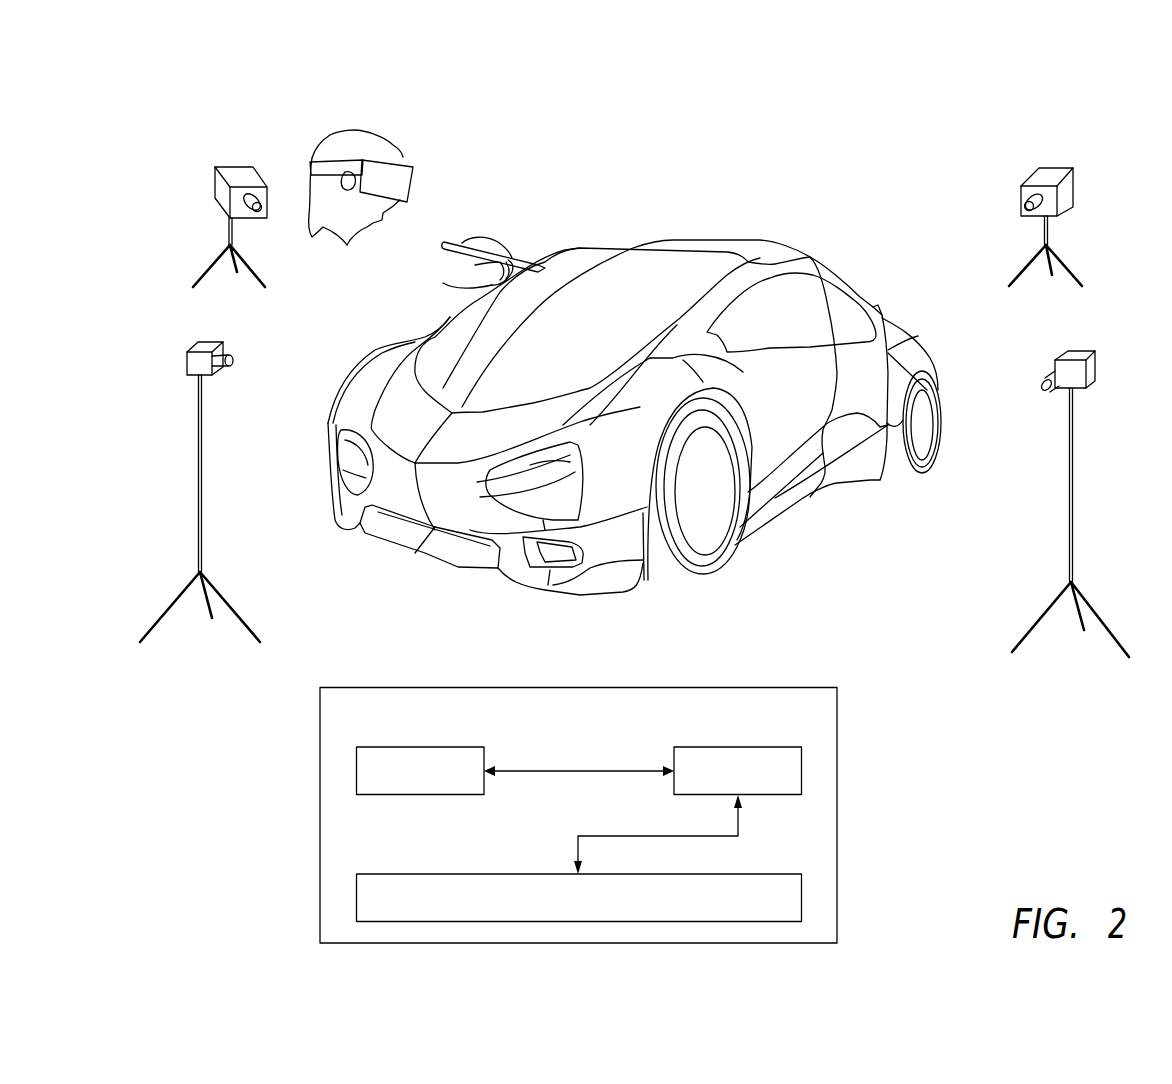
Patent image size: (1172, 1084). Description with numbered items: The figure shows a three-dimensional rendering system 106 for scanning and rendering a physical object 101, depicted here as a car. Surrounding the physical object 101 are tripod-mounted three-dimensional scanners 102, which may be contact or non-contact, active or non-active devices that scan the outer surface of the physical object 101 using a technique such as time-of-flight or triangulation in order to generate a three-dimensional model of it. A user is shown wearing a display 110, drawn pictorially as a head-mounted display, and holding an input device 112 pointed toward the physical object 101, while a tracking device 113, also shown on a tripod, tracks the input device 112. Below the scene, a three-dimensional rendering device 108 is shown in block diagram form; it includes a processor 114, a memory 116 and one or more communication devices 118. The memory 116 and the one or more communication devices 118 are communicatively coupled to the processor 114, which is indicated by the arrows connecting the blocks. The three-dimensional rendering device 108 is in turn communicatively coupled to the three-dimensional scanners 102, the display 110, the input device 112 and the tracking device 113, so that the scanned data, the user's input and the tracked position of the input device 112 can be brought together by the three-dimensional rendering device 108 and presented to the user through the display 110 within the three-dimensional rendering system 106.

The physical object 101 is at (808, 257).
The three-dimensional scanner 102 is at (210, 342).
The 3D rendering system 106 is at (850, 74).
The 3D rendering device 108 is at (721, 687).
The display 110 is at (410, 158).
The input device 112 is at (533, 250).
The tracking device 113 is at (238, 167).
The processor 114 is at (801, 770).
The memory 116 is at (357, 773).
The one or more communication devices 118 is at (801, 896).